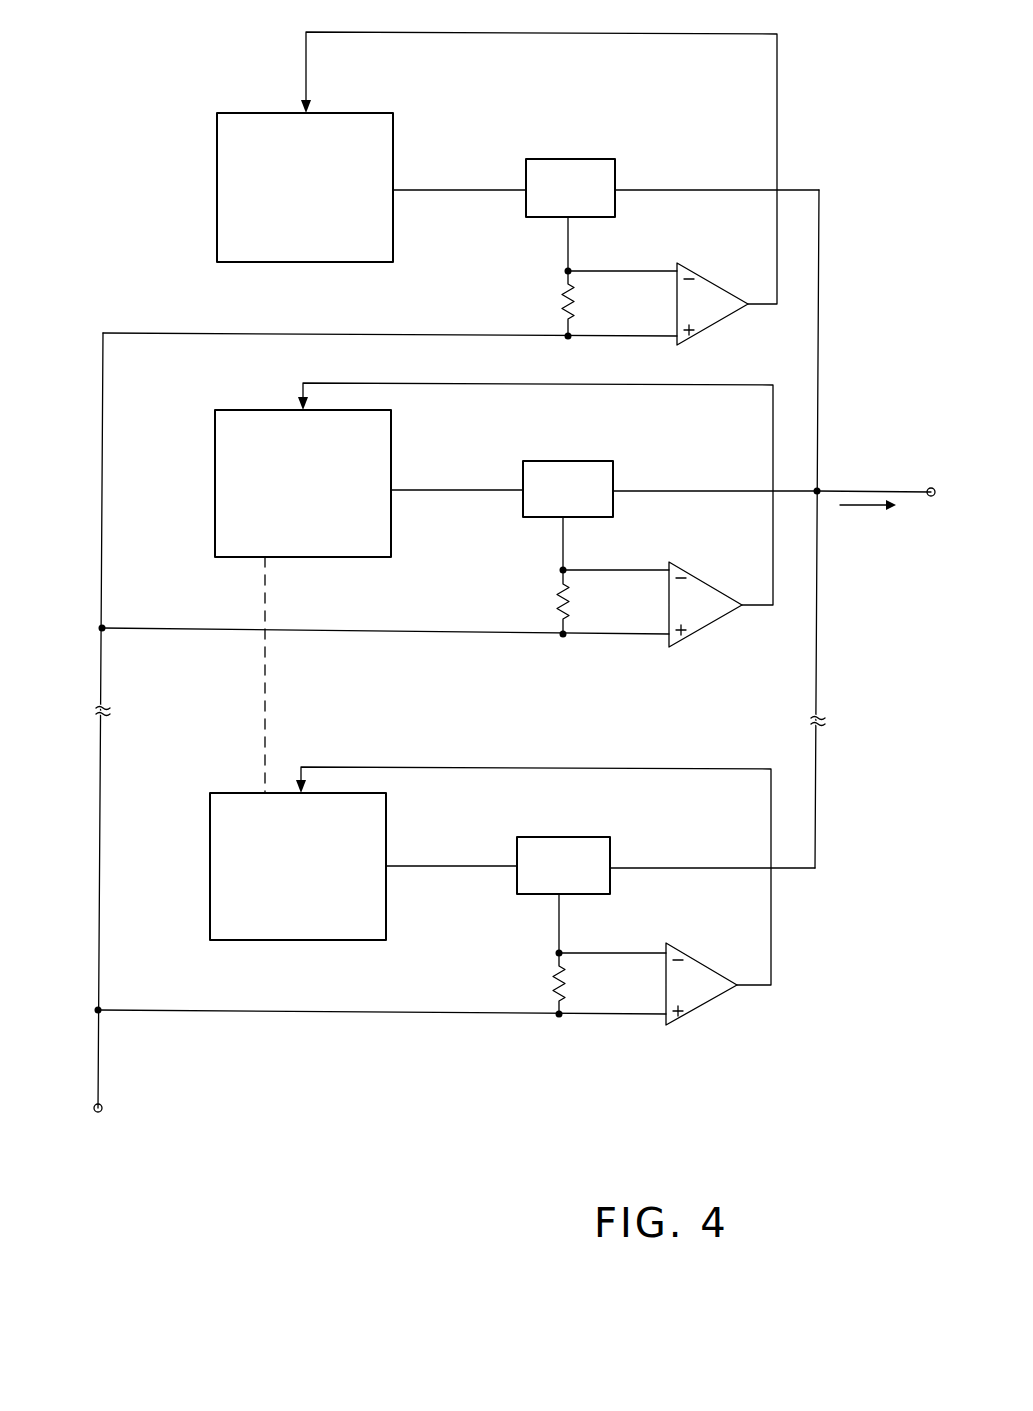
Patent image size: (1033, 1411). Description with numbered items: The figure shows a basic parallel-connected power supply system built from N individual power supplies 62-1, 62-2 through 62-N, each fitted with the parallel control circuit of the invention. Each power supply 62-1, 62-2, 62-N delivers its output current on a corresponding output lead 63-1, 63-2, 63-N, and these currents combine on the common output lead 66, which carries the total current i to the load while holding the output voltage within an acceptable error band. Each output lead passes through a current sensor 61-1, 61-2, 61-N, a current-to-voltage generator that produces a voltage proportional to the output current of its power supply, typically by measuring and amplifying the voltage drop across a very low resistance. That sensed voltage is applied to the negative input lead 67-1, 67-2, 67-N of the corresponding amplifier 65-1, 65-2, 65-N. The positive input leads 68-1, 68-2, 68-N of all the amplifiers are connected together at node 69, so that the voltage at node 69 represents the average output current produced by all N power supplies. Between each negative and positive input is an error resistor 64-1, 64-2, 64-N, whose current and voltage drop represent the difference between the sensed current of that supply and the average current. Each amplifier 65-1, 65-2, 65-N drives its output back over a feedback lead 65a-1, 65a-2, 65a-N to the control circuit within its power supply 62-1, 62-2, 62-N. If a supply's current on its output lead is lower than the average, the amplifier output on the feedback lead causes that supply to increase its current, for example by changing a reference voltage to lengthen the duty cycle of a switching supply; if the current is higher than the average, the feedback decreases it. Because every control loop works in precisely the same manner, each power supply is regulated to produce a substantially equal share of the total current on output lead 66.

The power supply 62-1 is at (305, 187).
The power supply 62-2 is at (303, 601).
The power supply 62-N is at (298, 866).
The current sensor 61-1 is at (672, 188).
The current sensor 61-2 is at (670, 489).
The current sensor 61-N is at (666, 865).
The output lead 63-1 is at (471, 183).
The output lead 63-2 is at (487, 476).
The output lead 63-N is at (489, 861).
The error resistor 64-1 is at (539, 278).
The error resistor 64-2 is at (533, 577).
The error resistor 64-N is at (527, 956).
The amplifier 65-1 is at (703, 306).
The amplifier 65-2 is at (698, 611).
The amplifier 65-N is at (718, 997).
The feedback lead 65a-1 is at (539, 153).
The feedback lead 65a-2 is at (483, 383).
The feedback lead 65a-N is at (470, 766).
The negative input lead 67-1 is at (663, 265).
The negative input lead 67-2 is at (645, 570).
The negative input lead 67-N is at (653, 954).
The positive input lead 68-1 is at (403, 333).
The positive input lead 68-2 is at (393, 630).
The positive input lead 68-N is at (408, 1012).
The output lead 66 is at (878, 529).
The node 69 is at (114, 727).